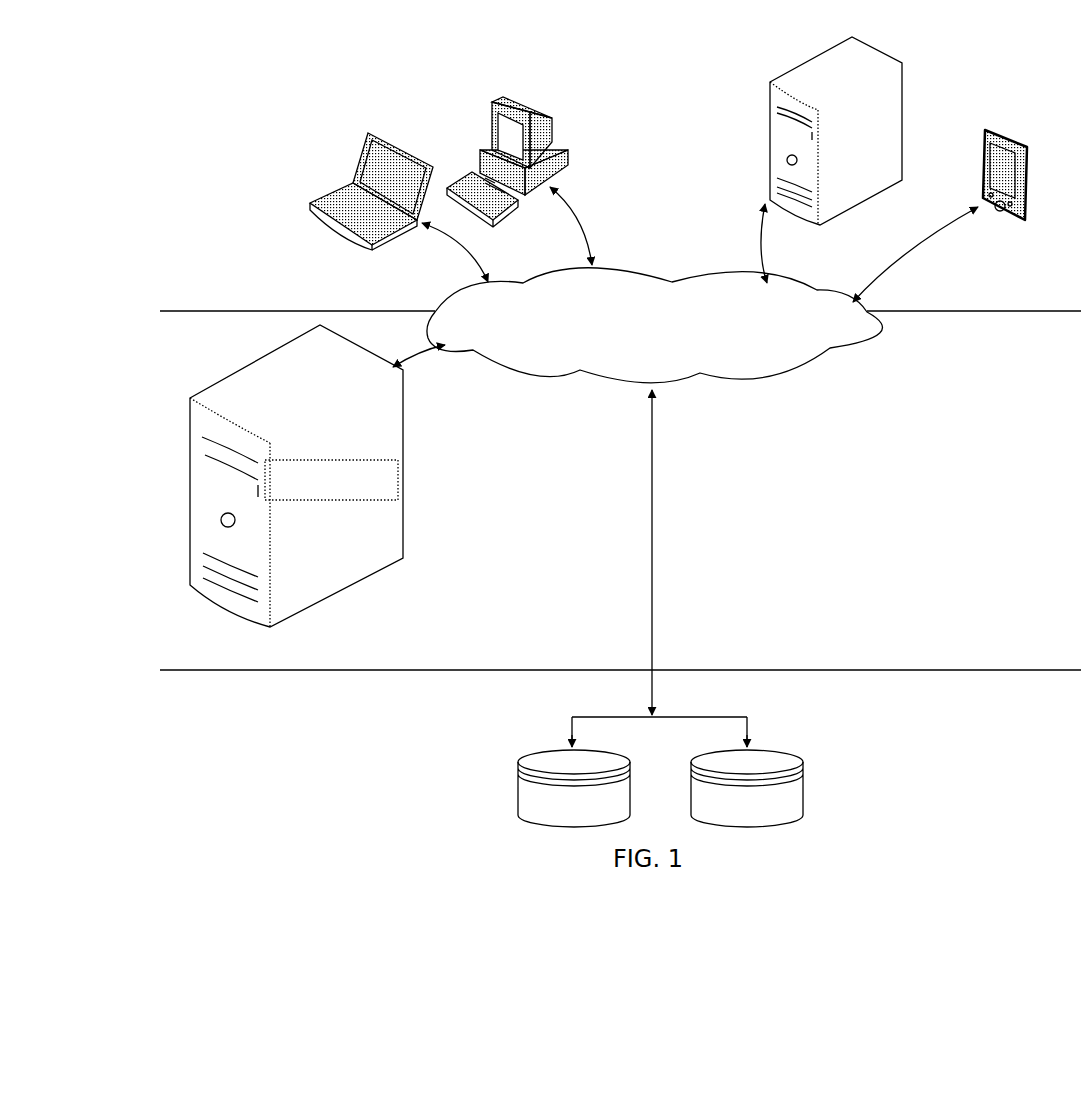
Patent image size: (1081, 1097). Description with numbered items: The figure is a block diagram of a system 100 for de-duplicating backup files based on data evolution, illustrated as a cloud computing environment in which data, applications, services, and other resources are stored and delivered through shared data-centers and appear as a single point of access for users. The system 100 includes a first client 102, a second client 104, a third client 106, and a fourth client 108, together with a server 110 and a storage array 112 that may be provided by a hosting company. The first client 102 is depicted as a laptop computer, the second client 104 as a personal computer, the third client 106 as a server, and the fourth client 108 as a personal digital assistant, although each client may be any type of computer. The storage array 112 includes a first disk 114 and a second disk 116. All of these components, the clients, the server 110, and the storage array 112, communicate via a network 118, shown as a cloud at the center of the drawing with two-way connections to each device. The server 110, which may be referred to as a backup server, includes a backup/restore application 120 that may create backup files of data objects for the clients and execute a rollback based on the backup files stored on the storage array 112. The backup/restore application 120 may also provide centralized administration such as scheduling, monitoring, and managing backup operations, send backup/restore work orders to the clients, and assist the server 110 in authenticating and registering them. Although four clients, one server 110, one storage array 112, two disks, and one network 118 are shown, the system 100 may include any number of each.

The system 100 is at (622, 112).
The first client 102 is at (367, 135).
The second client 104 is at (490, 98).
The third client 106 is at (768, 83).
The fourth client 108 is at (985, 130).
The server 110 is at (265, 491).
The storage array 112 is at (826, 723).
The first disk 114 is at (532, 752).
The second disk 116 is at (698, 752).
The network 118 is at (655, 325).
The backup/restore application 120 is at (331, 480).